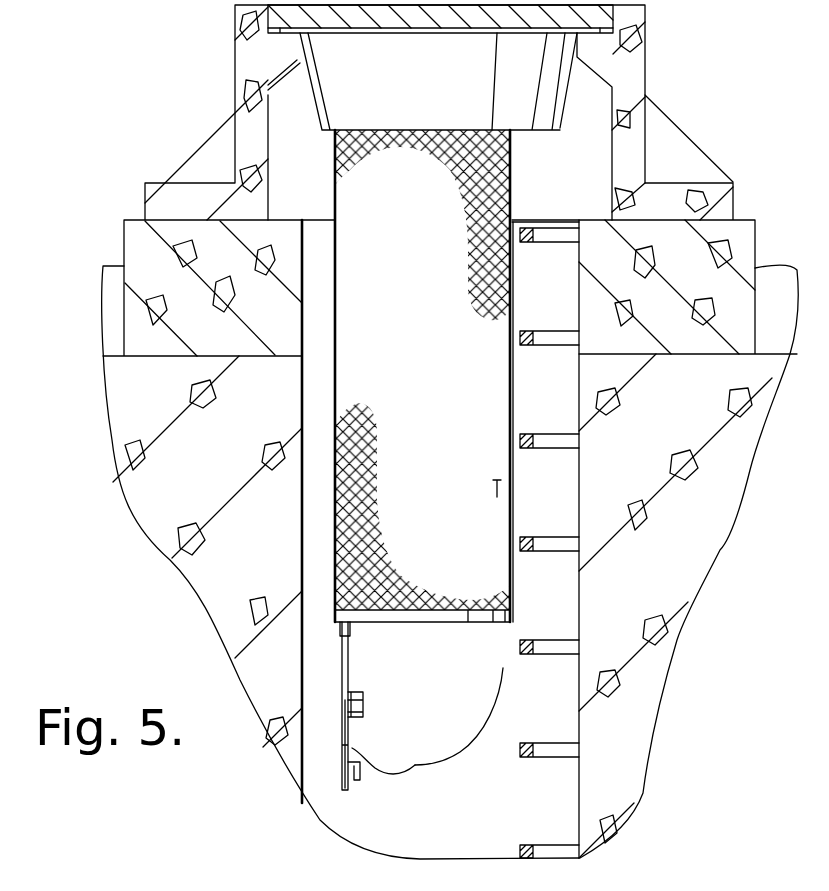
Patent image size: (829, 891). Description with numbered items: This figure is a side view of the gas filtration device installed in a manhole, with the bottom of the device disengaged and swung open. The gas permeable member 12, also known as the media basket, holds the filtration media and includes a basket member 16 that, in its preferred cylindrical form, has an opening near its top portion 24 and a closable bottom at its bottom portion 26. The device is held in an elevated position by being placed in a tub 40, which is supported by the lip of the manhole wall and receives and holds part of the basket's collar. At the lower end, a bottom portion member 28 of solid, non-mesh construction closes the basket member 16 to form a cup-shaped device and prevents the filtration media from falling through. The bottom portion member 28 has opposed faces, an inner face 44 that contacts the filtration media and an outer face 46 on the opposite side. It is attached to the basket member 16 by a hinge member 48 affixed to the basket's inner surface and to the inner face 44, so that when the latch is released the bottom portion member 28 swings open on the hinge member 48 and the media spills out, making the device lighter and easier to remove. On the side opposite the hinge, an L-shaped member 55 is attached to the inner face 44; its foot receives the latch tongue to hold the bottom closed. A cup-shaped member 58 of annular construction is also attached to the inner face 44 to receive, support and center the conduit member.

The gas permeable member 12 is at (312, 522).
The basket member 16 is at (498, 488).
The top portion 24 is at (560, 172).
The bottom portion 26 is at (485, 624).
The bottom portion member 28 is at (343, 732).
The tub 40 is at (287, 122).
The inner face 44 is at (416, 765).
The outer face 46 is at (340, 680).
The hinge member 48 is at (340, 628).
The L-shaped member 55 is at (362, 776).
The cup-shaped member 58 is at (358, 692).